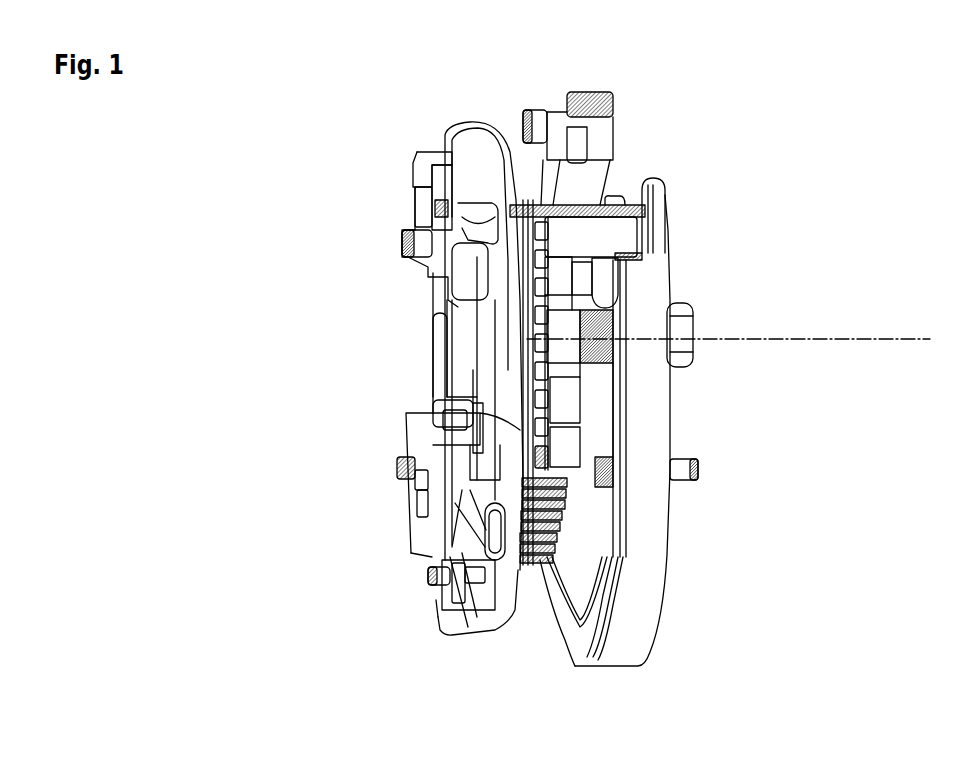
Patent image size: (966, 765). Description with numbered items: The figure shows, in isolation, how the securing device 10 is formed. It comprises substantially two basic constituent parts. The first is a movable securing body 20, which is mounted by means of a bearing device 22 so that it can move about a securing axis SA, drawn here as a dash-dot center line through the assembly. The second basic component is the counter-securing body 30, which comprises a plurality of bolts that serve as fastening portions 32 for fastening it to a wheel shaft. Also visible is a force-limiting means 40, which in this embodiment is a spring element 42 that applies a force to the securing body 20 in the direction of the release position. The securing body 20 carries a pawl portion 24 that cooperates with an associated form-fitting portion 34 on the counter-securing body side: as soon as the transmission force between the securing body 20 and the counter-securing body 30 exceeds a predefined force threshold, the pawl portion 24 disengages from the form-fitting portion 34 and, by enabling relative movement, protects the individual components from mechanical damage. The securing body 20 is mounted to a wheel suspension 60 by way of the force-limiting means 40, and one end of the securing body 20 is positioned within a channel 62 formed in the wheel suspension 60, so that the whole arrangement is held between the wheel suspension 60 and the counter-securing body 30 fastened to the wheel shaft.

The securing device 10 is at (213, 275).
The securing body 20 is at (578, 293).
The bearing device 22 is at (520, 331).
The pawl portion 24 is at (535, 459).
The counter-securing body 30 is at (442, 153).
The fastening portions 32 is at (438, 210).
The form-fitting portion 34 is at (531, 567).
The force-limiting means 40 is at (620, 335).
The spring element 42 is at (620, 360).
The wheel suspension 60 is at (650, 535).
The channel 62 is at (643, 201).
The securing axis SA is at (868, 335).